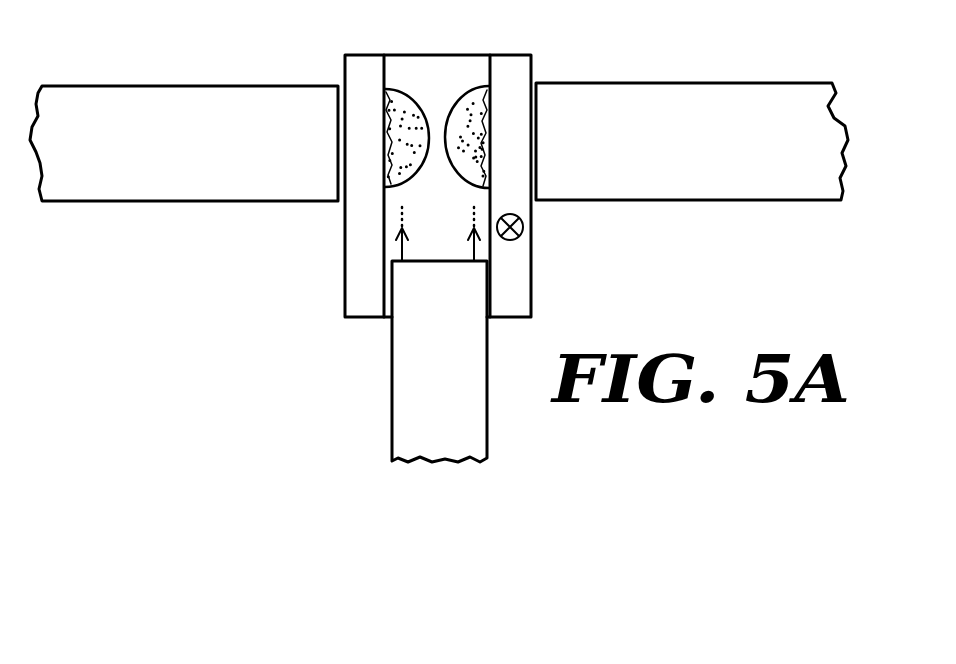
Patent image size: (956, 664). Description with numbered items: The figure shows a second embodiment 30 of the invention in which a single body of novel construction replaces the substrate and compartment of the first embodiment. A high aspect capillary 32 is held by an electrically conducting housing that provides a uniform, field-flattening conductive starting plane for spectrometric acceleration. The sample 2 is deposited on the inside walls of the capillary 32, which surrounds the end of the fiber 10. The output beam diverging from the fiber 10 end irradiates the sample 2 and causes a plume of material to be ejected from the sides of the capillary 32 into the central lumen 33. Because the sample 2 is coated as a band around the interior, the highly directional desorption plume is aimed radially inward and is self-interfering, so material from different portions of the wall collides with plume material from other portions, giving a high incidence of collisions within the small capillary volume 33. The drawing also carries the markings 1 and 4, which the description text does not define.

The fluid flow 1 is at (445, 237).
The sample 2 is at (388, 72).
The sealant bead 4 is at (398, 96).
The fiber 10 is at (490, 445).
The second embodiment 30 is at (300, 55).
The high aspect capillary 32 is at (515, 62).
The central lumen 33 is at (445, 78).